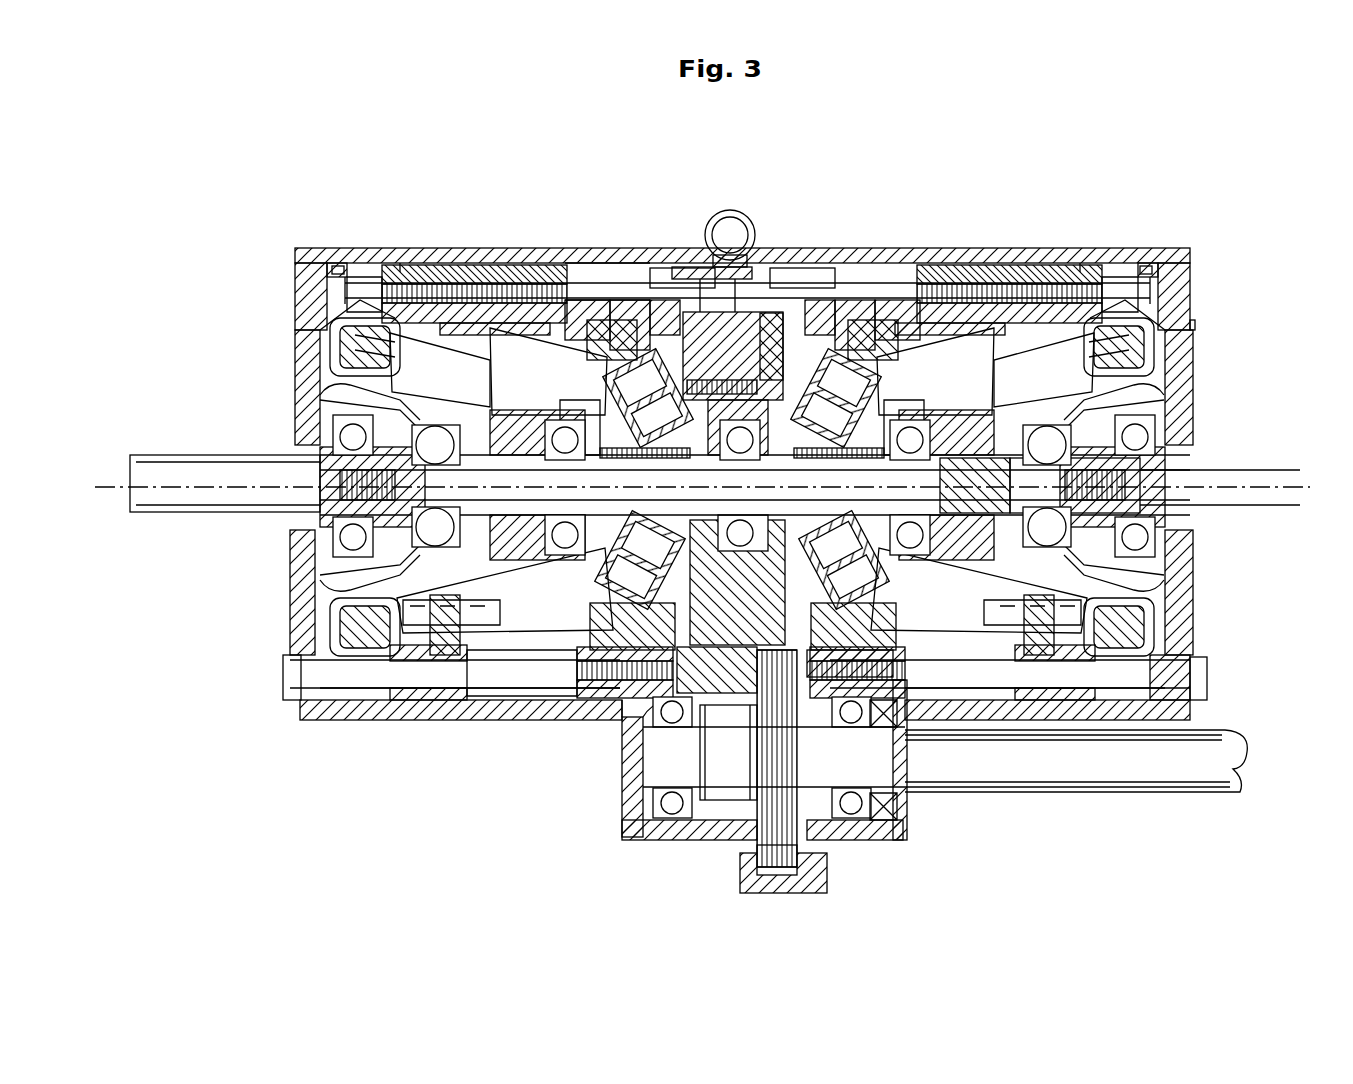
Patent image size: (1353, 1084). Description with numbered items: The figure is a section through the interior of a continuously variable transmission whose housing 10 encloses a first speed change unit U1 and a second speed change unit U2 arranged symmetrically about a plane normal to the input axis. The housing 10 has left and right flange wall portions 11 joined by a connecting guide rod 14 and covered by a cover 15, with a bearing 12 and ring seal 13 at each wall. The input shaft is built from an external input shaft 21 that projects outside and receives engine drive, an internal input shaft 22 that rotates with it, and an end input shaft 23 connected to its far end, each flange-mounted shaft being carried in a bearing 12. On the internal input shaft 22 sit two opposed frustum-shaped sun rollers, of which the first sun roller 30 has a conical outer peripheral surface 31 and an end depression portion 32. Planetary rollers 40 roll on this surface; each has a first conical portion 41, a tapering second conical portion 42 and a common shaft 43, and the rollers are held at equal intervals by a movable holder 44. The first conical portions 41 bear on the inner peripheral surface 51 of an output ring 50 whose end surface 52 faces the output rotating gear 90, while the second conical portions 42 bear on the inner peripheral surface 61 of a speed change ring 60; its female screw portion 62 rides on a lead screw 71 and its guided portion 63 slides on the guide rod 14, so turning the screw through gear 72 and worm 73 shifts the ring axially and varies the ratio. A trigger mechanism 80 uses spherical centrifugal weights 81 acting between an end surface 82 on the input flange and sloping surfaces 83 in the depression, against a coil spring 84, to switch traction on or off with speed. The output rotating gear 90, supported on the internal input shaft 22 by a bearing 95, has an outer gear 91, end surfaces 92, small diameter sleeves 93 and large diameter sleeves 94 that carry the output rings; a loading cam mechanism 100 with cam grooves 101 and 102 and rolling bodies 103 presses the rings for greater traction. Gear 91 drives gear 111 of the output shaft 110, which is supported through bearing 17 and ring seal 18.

The housing 10 is at (890, 248).
The flange wall portion 11 is at (320, 260).
The bearing 12 is at (335, 430).
The ring seal 13 is at (300, 470).
The connecting guide rod 14 is at (505, 700).
The cover 15 is at (920, 248).
The bearing 17 is at (665, 830).
The ring seal 18 is at (900, 840).
The external input shaft 21 is at (345, 515).
The internal input shaft 22 is at (1250, 505).
The end input shaft 23 is at (1180, 445).
The first sun roller 30 is at (545, 635).
The outer peripheral surface 31 is at (540, 340).
The depression portion 32 is at (440, 400).
The first planetary roller 40 is at (542, 290).
The first conical portion 41 is at (560, 300).
The second conical portion 42 is at (468, 300).
The common shaft 43 is at (335, 330).
The first movable holder 44 is at (345, 395).
The first output ring 50 is at (615, 300).
The inner peripheral surface 51 is at (600, 300).
The end surface 52 is at (655, 268).
The first speed change ring 60 is at (410, 265).
The inner peripheral surface 61 is at (385, 345).
The female screw portion 62 is at (440, 265).
The guided portion 63 is at (440, 600).
The lead screw 71 is at (575, 285).
The gear 72 is at (735, 210).
The worm 73 is at (720, 255).
The trigger mechanism 80 is at (445, 590).
The centrifugal weight 81 is at (450, 585).
The end surface 82 is at (425, 600).
The sloping surface 83 is at (470, 565).
The coil spring 84 is at (660, 458).
The output rotating gear 90 is at (762, 312).
The gear 91 is at (780, 280).
The end surface 92 is at (665, 300).
The small diameter sleeve 93 is at (590, 455).
The large diameter sleeve 94 is at (625, 320).
The bearing 95 is at (735, 455).
The loading cam mechanism 100 is at (665, 800).
The cam groove 101 is at (615, 760).
The cam groove 102 is at (757, 730).
The rolling body 103 is at (705, 695).
The output shaft 110 is at (1185, 775).
The gear 111 is at (755, 860).
The first speed change unit U1 is at (500, 300).
The second speed change unit U2 is at (960, 300).